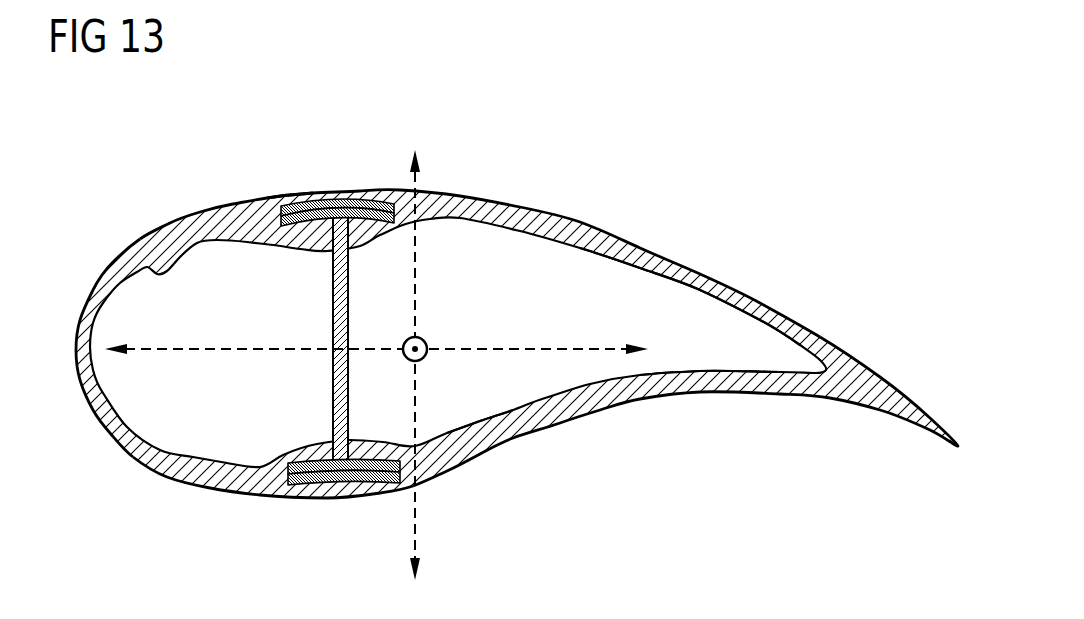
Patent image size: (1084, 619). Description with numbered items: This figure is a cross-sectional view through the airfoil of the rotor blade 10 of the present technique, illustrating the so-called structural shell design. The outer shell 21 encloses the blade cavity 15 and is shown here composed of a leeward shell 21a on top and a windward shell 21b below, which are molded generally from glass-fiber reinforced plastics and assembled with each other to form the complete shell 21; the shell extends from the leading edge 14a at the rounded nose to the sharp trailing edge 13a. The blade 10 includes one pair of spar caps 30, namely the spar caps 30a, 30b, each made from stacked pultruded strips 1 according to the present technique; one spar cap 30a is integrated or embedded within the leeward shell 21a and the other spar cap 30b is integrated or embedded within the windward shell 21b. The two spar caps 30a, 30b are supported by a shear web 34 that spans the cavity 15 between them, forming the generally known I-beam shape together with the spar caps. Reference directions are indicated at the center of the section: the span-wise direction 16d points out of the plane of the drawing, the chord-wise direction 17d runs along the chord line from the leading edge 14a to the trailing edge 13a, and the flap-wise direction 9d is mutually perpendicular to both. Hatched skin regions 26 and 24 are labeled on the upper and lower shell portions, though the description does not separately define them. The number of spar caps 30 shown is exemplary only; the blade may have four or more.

The rotor blade 10 is at (166, 174).
The pultruded strip 1 is at (292, 201).
The spar cap 30 is at (336, 345).
The spar cap 30a is at (341, 180).
The spar cap 30b is at (322, 513).
The suction side shell 26 is at (565, 213).
The shell 21 is at (657, 262).
The leeward shell 21a is at (724, 291).
The windward shell 21b is at (663, 384).
The blade cavity 15 is at (606, 318).
The span-wise direction 16d is at (427, 342).
The chord-wise direction 17d is at (517, 353).
The flap-wise direction 9d is at (419, 545).
The shear web 34 is at (333, 379).
The leading edge 14a is at (68, 382).
The trailing edge 13a is at (910, 449).
The pressure side shell 24 is at (523, 431).